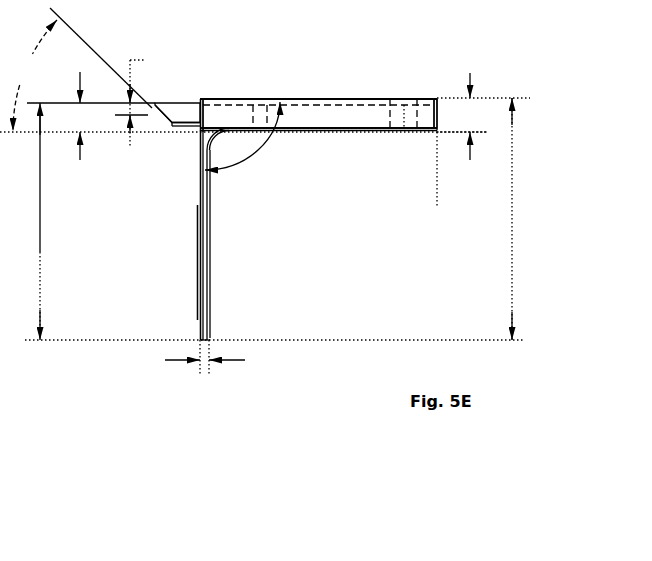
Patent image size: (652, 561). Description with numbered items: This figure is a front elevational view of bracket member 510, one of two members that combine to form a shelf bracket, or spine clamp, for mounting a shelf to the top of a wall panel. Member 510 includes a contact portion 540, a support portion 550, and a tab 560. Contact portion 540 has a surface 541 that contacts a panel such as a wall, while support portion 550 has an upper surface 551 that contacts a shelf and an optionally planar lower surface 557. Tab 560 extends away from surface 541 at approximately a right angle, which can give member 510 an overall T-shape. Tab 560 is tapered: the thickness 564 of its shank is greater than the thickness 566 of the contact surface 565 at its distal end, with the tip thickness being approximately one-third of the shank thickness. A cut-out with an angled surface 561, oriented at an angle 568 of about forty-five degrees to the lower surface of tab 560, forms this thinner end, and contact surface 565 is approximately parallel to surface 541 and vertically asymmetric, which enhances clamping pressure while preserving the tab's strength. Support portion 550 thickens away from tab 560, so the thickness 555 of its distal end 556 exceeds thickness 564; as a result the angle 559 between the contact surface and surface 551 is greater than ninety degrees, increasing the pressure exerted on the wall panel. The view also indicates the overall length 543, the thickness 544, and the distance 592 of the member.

The bracket member 510 is at (540, 185).
The contact portion 540 is at (208, 227).
The contact surface of contact portion 541 is at (200, 188).
The length 543 is at (40, 235).
The thickness 544 is at (228, 362).
The support portion 550 is at (383, 130).
The upper surface of support portion 551 is at (289, 99).
The thickness of distal end 555 is at (483, 116).
The distal end of support portion 556 is at (406, 98).
The lower surface of support portion 557 is at (362, 130).
The angle 559 is at (268, 144).
The tab 560 is at (182, 103).
The angled surface 561 is at (172, 126).
The thickness of tab shank 564 is at (91, 116).
The contact surface of tab 565 is at (177, 114).
The thickness of contact surface 566 is at (153, 100).
The angle 568 is at (79, 69).
The distance 592 is at (508, 270).